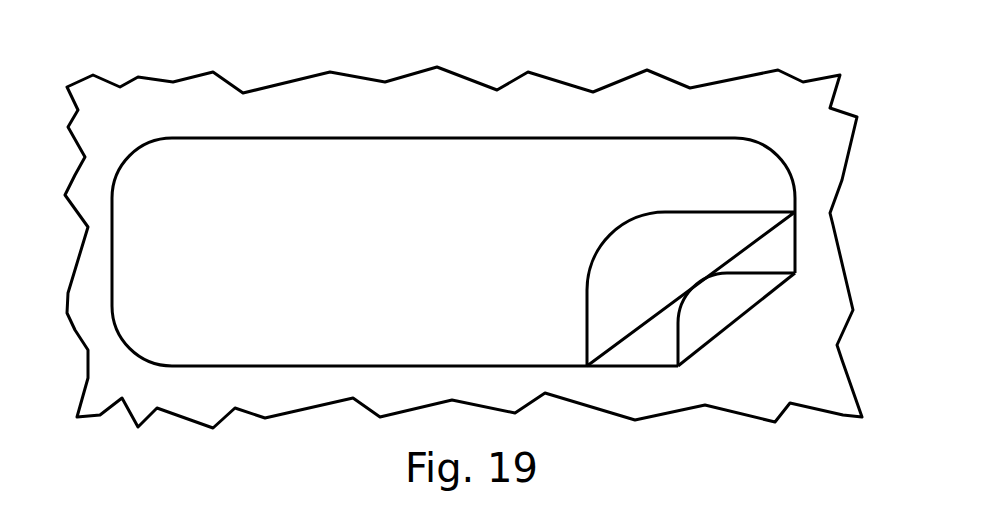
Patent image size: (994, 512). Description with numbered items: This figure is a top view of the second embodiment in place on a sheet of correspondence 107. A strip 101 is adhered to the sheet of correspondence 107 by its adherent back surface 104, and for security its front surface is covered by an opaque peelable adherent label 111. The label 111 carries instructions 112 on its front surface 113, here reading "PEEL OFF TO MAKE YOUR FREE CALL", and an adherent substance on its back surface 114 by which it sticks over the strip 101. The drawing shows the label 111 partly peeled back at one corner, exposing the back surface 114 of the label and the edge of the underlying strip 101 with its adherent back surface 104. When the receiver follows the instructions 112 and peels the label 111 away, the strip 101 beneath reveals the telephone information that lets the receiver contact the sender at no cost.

The sheet of correspondence 107 is at (797, 117).
The opaque peelable adherent label 111 is at (187, 180).
The front surface of the label 113 is at (227, 320).
The instructions 112 is at (481, 206).
The back surface of the label 114 is at (740, 223).
The adherent back surface 104 is at (707, 323).
The strip 101 is at (783, 283).